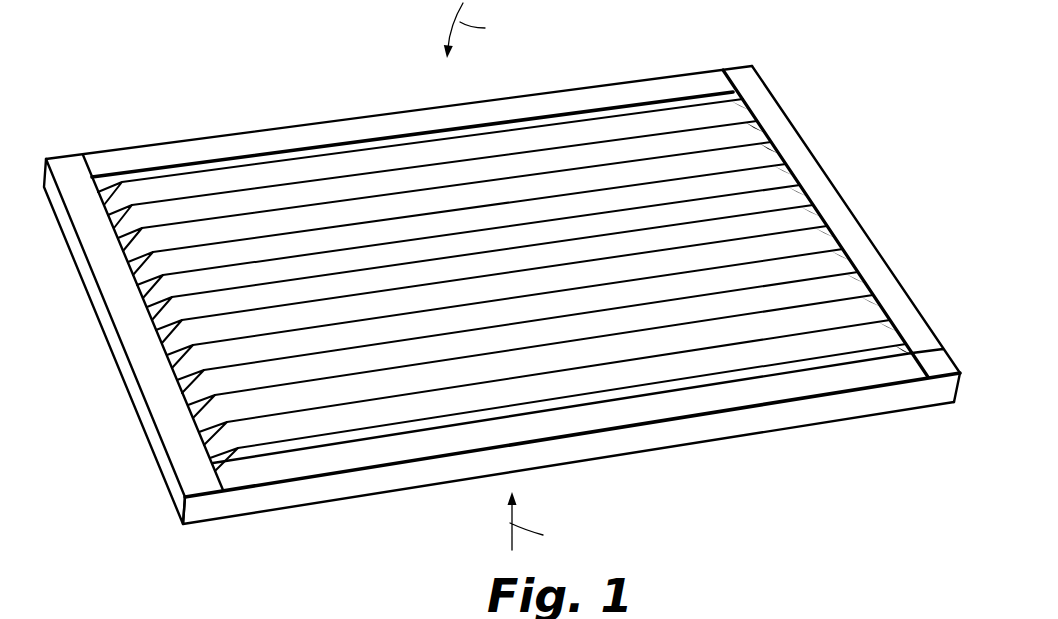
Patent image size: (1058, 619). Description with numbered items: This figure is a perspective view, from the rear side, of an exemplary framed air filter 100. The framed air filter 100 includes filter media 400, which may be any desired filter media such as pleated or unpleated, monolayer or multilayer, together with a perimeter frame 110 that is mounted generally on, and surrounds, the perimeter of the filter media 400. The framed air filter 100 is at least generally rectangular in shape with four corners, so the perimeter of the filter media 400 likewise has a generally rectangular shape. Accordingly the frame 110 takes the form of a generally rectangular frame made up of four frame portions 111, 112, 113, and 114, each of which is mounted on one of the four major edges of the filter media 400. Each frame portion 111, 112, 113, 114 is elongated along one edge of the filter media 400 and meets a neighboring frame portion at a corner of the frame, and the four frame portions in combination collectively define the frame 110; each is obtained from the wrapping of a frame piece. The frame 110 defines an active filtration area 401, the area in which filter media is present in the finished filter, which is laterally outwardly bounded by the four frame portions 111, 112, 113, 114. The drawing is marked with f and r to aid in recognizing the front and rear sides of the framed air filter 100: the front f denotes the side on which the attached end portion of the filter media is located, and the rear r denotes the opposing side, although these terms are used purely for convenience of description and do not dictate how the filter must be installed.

The framed air filter 100 is at (502, 297).
The perimeter frame 110 is at (502, 329).
The frame portion 111 is at (212, 148).
The frame portion 112 is at (820, 186).
The frame portion 113 is at (605, 446).
The frame portion 114 is at (158, 447).
The filter media 400 is at (506, 307).
The active filtration area 401 is at (368, 140).
The rear side marker r is at (470, 30).
The front side marker f is at (531, 521).